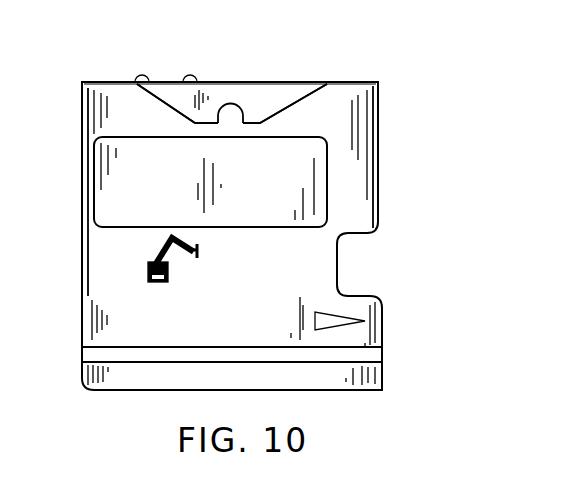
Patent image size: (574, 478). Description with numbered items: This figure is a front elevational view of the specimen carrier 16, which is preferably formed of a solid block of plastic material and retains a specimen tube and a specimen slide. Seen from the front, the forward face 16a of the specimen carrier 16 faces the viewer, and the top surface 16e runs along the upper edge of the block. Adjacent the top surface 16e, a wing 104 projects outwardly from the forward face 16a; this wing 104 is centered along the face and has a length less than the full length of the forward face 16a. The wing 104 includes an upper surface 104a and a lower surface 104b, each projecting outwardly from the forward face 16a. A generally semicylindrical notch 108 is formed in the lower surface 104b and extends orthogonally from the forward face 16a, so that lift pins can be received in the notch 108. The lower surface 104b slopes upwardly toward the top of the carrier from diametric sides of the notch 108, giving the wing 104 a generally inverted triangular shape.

The specimen carrier 16 is at (72, 133).
The forward face 16a is at (348, 177).
The top surface 16e is at (363, 82).
The wing 104 is at (275, 100).
The upper surface 104a is at (208, 82).
The lower surface 104b is at (260, 125).
The semicylindrical notch 108 is at (230, 115).